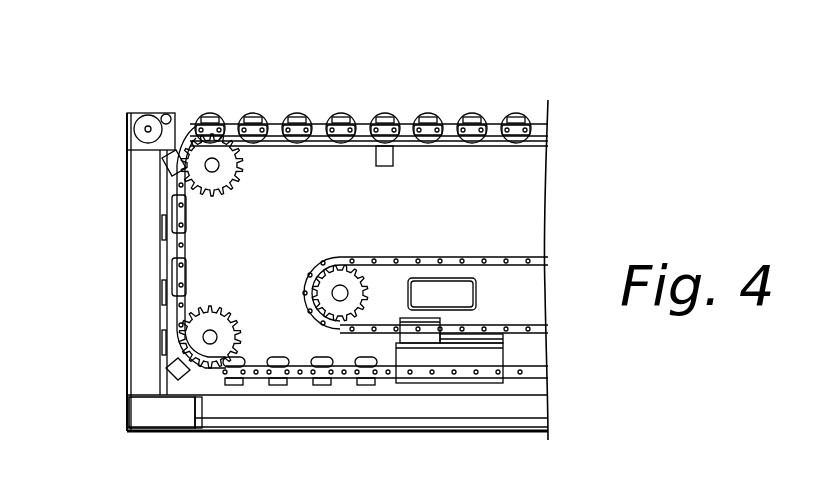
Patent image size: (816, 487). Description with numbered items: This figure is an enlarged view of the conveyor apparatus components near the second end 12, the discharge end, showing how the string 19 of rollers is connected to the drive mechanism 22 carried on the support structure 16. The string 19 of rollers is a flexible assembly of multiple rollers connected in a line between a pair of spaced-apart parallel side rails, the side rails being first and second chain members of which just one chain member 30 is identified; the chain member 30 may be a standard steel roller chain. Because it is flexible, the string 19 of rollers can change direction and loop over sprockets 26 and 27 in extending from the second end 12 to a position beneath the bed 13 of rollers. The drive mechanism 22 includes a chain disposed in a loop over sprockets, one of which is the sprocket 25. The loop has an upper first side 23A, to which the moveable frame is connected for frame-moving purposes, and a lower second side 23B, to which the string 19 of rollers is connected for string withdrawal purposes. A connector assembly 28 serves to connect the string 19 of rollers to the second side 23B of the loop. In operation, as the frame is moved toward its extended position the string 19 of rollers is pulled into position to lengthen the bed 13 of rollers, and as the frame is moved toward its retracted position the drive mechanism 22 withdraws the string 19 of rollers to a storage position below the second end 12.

The second end 12 is at (117, 130).
The bed of rollers 13 is at (430, 105).
The support structure 16 is at (300, 432).
The string of rollers 19 is at (212, 113).
The drive mechanism 22 is at (346, 214).
The first side of the loop 23A is at (512, 258).
The second side of the loop 23B is at (515, 328).
The sprocket 25 is at (328, 285).
The sprocket 26 is at (198, 176).
The sprocket 27 is at (215, 338).
The connector assembly 28 is at (495, 362).
The chain member 30 is at (497, 135).